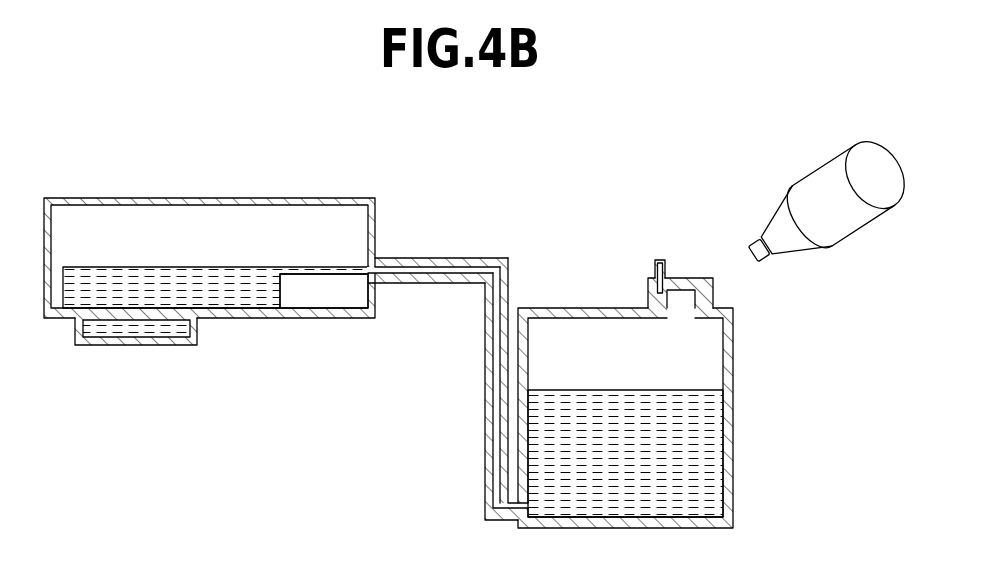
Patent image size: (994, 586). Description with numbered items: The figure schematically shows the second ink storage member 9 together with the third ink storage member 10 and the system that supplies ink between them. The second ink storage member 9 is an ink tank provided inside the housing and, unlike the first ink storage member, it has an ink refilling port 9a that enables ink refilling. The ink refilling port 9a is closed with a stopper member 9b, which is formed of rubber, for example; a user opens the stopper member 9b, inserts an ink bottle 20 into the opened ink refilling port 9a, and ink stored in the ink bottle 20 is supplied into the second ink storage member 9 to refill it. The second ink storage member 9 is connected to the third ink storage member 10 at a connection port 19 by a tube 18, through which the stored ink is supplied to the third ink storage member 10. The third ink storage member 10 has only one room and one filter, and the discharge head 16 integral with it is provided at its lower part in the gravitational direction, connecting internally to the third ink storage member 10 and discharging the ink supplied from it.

The second ink storage member 9 is at (753, 418).
The ink refilling port 9a is at (708, 297).
The stopper member 9b is at (693, 278).
The third ink storage member 10 is at (332, 198).
The discharge head 16 is at (170, 345).
The tube 18 is at (485, 432).
The connection port 19 is at (376, 260).
The ink bottle 20 is at (857, 222).